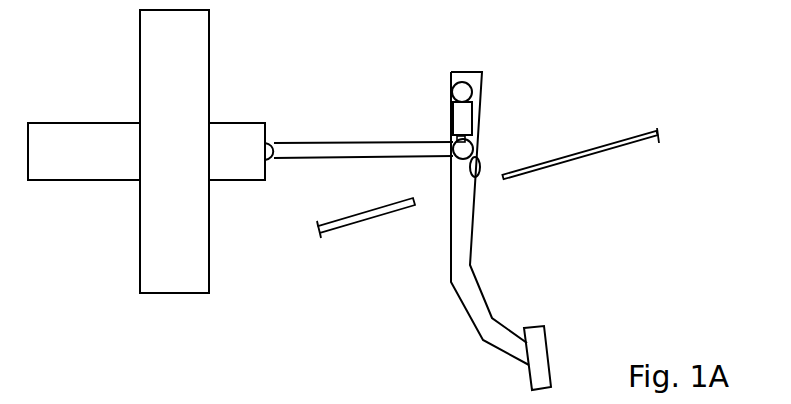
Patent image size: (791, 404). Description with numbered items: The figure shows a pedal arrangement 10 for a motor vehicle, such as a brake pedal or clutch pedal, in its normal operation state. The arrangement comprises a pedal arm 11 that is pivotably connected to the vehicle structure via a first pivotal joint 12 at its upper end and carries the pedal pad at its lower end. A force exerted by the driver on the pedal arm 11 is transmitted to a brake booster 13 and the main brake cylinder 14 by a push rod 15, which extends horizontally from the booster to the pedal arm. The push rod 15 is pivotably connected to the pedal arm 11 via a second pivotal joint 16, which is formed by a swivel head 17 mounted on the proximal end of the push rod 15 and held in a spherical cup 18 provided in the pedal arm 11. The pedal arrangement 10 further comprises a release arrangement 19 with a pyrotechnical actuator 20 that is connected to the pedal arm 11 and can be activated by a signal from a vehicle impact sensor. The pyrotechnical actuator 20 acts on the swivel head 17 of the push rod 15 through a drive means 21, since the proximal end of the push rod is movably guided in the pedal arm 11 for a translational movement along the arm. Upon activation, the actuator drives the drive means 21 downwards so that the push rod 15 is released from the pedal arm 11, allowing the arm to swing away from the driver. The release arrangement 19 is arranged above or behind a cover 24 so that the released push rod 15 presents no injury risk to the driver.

The pedal arrangement 10 is at (568, 273).
The pedal arm 11 is at (470, 293).
The first pivotal joint 12 is at (465, 90).
The brake booster 13 is at (140, 65).
The main brake cylinder 14 is at (80, 123).
The push rod 15 is at (293, 150).
The second pivotal joint 16 is at (478, 148).
The swivel head 17 is at (460, 160).
The spherical cup 18 is at (478, 146).
The release arrangement 19 is at (418, 103).
The pyrotechnical actuator 20 is at (462, 118).
The drive means 21 is at (454, 139).
The cover 24 is at (580, 162).